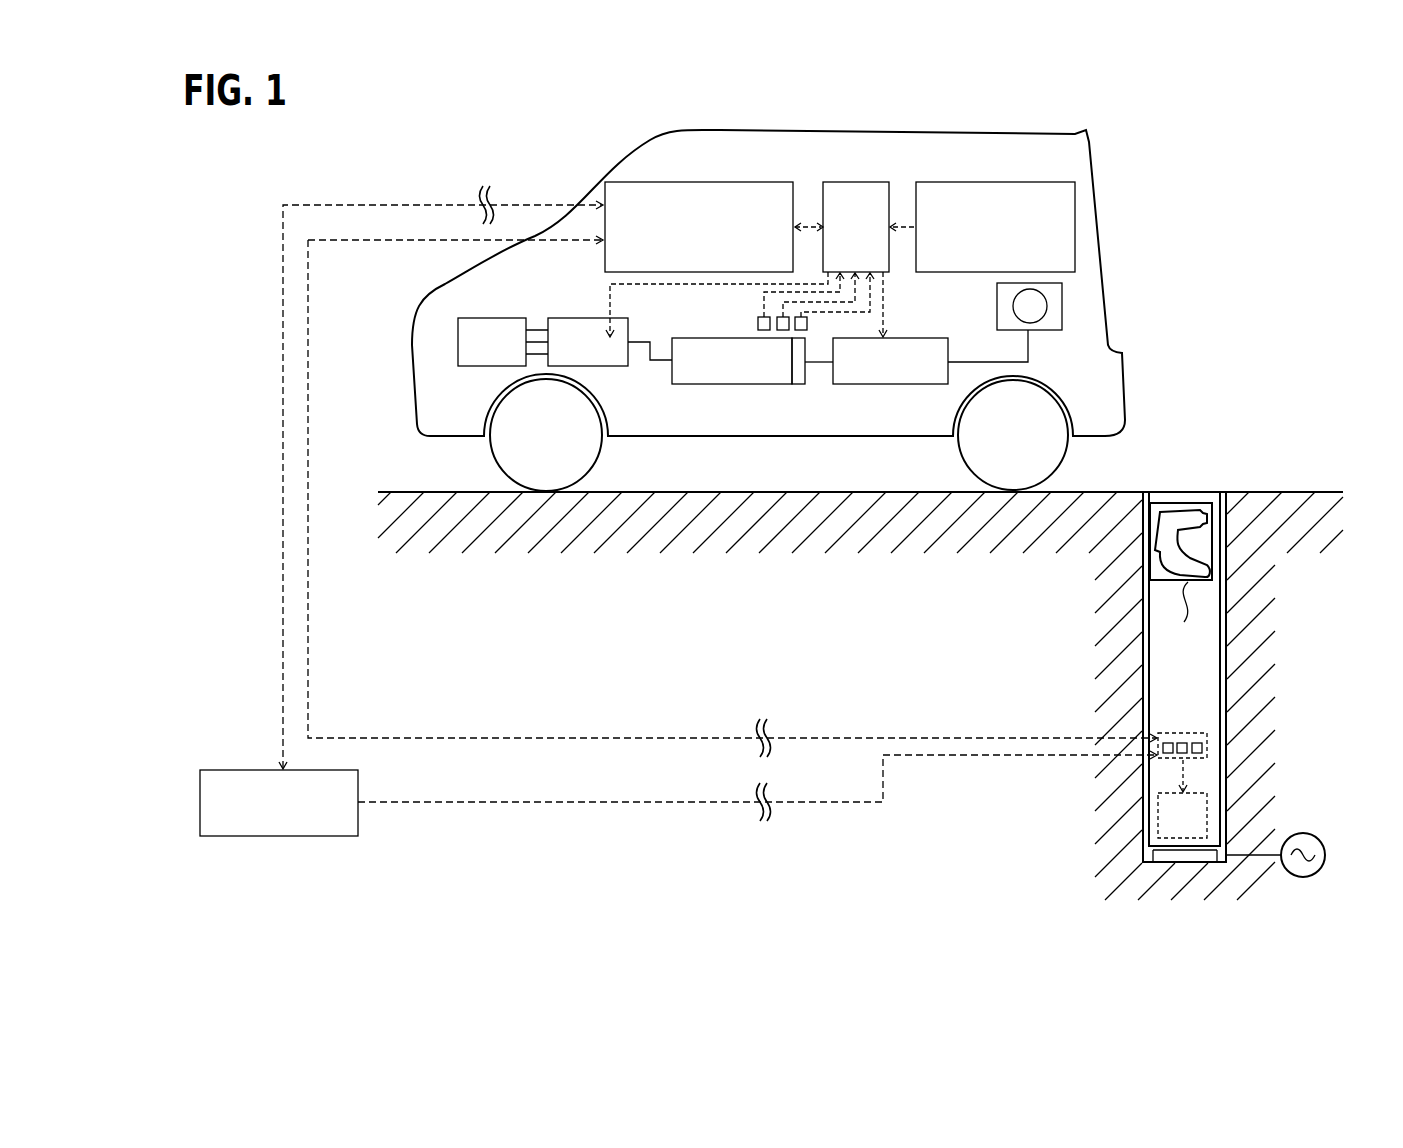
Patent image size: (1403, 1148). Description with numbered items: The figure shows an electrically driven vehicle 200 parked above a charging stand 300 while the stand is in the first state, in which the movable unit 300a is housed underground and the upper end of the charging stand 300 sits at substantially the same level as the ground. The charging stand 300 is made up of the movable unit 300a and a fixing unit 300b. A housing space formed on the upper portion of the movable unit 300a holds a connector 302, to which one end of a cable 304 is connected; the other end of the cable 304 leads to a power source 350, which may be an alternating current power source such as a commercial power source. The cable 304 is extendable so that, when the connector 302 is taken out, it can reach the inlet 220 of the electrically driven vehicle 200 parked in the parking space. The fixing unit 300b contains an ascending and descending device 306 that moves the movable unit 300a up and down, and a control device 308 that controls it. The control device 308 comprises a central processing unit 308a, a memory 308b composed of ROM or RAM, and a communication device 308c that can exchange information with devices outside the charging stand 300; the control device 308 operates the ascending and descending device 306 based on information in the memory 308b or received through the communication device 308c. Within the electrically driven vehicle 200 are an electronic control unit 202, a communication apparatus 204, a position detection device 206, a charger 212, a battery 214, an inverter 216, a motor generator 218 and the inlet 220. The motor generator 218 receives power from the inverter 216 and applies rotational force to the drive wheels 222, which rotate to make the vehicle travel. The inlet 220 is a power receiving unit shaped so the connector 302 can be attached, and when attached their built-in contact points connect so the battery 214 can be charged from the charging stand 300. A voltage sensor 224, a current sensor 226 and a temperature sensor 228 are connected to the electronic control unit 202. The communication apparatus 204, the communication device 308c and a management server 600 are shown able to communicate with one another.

The electrically driven vehicle 200 is at (945, 140).
The electronic control unit (ECU) 202 is at (865, 180).
The communication apparatus 204 is at (730, 182).
The position detection device 206 is at (993, 181).
The charger 212 is at (907, 337).
The battery 214 is at (733, 337).
The inverter 216 is at (562, 314).
The motor generator 218 is at (490, 316).
The inlet 220 is at (1050, 330).
The drive wheels 222 is at (600, 416).
The voltage sensor 224 is at (763, 331).
The current sensor 226 is at (783, 331).
The temperature sensor 228 is at (801, 331).
The charging stand 300 is at (1198, 474).
The movable unit 300a is at (1213, 492).
The fixing unit 300b is at (1170, 860).
The connector 302 is at (1188, 530).
The cable 304 is at (1180, 623).
The ascending and descending device 306 is at (1207, 812).
The control device 308 is at (1207, 750).
The central processing unit (CPU) 308a is at (1197, 742).
The memory 308b is at (1183, 742).
The communication device 308c is at (1168, 757).
The power source 350 is at (1326, 853).
The management server 600 is at (360, 783).